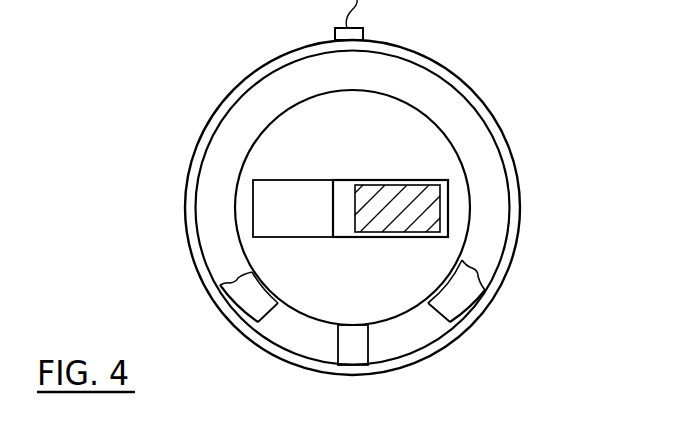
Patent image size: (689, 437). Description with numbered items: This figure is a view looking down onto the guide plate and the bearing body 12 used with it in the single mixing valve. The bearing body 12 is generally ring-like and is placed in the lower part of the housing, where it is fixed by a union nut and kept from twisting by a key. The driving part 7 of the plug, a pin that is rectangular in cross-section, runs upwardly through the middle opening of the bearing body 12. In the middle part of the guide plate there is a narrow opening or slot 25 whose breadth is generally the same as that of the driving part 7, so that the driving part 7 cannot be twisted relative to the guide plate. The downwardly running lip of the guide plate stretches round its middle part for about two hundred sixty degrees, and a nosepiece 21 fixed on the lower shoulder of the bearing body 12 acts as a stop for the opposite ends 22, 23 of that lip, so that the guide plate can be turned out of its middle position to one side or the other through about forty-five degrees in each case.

The bearing body 12 is at (492, 53).
The narrow opening or slot 25 is at (271, 182).
The driving part 7 is at (378, 197).
The end of edge of guide plate 22 is at (266, 318).
The end of edge of guide plate 23 is at (438, 319).
The nosepiece 21 is at (355, 354).